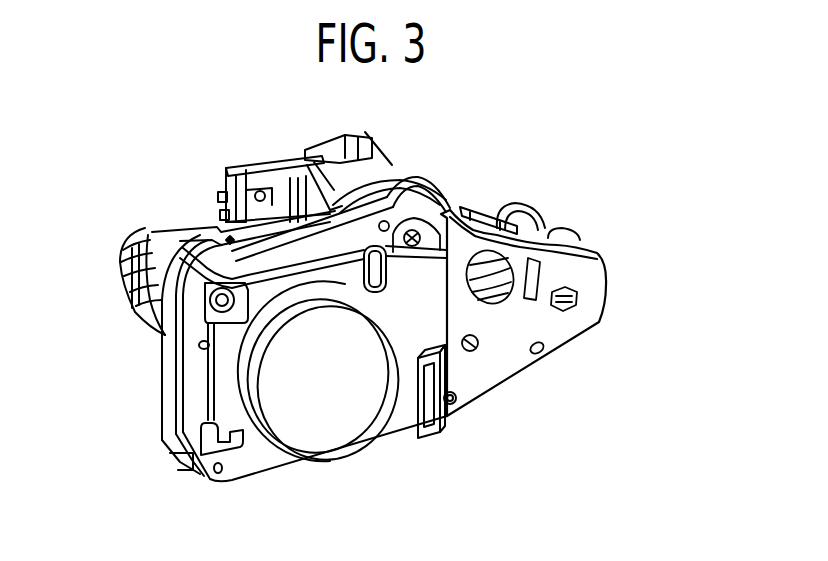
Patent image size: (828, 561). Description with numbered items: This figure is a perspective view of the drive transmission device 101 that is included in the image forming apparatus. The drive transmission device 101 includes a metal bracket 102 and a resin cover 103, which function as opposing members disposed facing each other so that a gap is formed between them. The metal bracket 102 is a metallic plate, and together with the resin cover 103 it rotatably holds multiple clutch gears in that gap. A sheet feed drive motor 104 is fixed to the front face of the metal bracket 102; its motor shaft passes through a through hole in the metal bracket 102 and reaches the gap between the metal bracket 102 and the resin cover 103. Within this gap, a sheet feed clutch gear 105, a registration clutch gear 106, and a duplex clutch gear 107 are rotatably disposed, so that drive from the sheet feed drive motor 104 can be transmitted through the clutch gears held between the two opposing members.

The drive transmission device 101 is at (588, 356).
The metal bracket 102 is at (503, 388).
The resin cover 103 is at (243, 167).
The sheet feed drive motor 104 is at (341, 460).
The sheet feed clutch gear 105 is at (563, 233).
The registration clutch gear 106 is at (418, 181).
The duplex clutch gear 107 is at (167, 249).